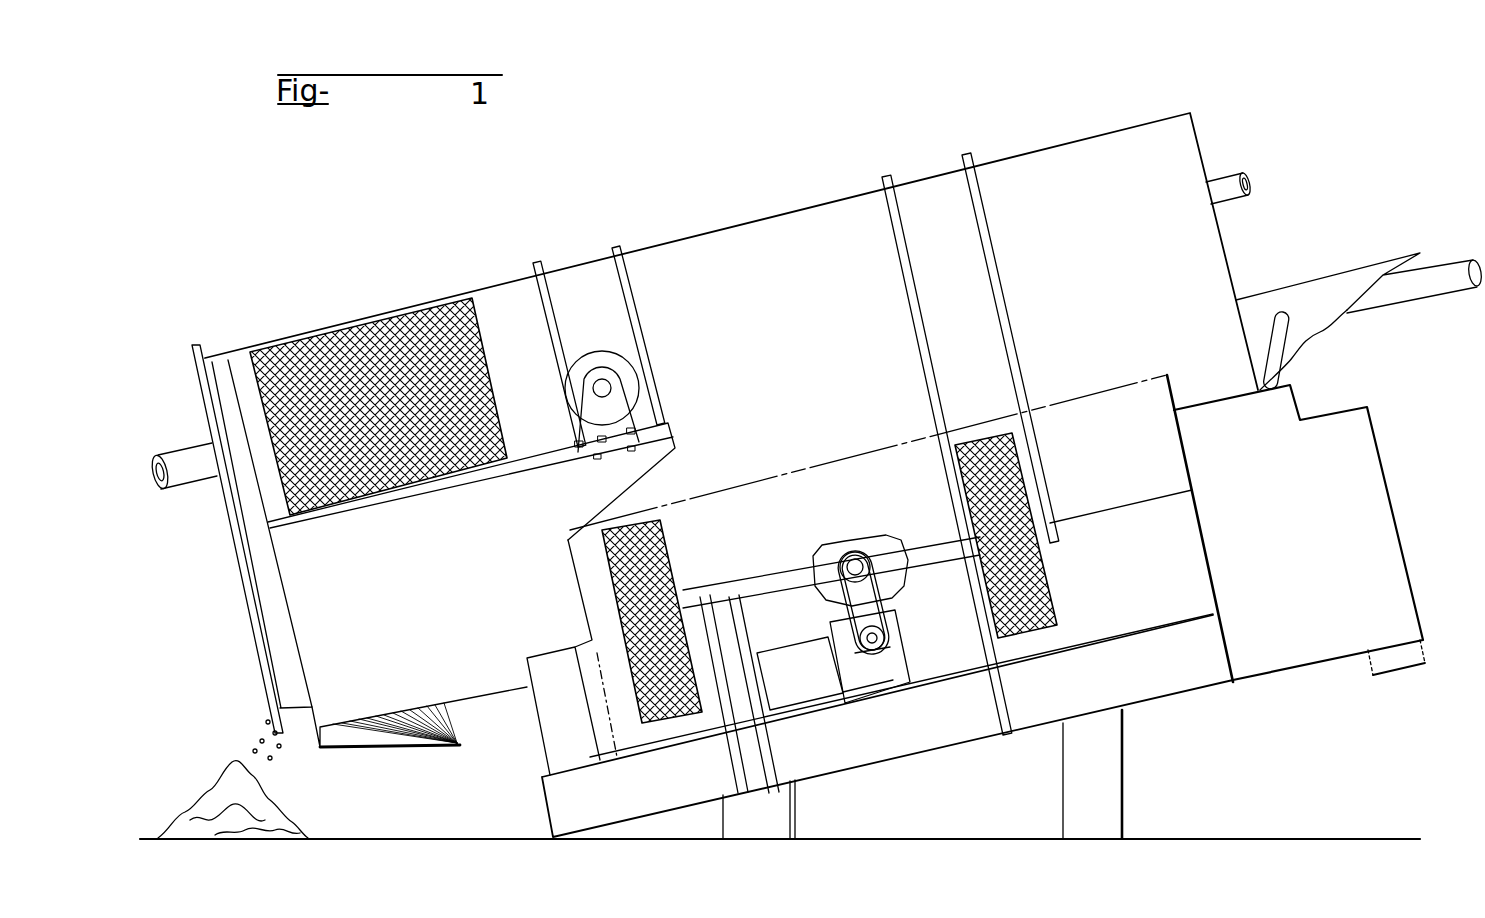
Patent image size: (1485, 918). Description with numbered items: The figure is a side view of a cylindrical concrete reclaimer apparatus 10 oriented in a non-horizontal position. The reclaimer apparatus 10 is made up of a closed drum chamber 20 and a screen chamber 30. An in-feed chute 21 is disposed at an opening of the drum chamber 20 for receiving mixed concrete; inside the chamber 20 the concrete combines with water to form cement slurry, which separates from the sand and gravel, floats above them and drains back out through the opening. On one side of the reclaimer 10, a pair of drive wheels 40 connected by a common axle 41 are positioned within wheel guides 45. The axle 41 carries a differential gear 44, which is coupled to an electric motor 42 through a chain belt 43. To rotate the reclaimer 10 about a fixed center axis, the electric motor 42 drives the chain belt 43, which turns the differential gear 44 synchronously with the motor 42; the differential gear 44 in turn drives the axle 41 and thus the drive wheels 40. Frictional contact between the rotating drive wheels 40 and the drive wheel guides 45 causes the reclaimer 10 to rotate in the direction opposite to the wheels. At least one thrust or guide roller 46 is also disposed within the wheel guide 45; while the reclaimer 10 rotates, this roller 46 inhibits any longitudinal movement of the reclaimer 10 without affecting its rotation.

The concrete reclaimer apparatus 10 is at (297, 189).
The closed drum chamber 20 is at (993, 160).
The in-feed chute 21 is at (1313, 277).
The screen chamber 30 is at (325, 333).
The drive wheels 40 is at (1037, 633).
The axle 41 is at (750, 587).
The electric motor 42 is at (905, 658).
The chain belt 43 is at (912, 570).
The differential gear 44 is at (870, 548).
The wheel guides 45 is at (572, 262).
The thrust or guide roller 46 is at (612, 351).